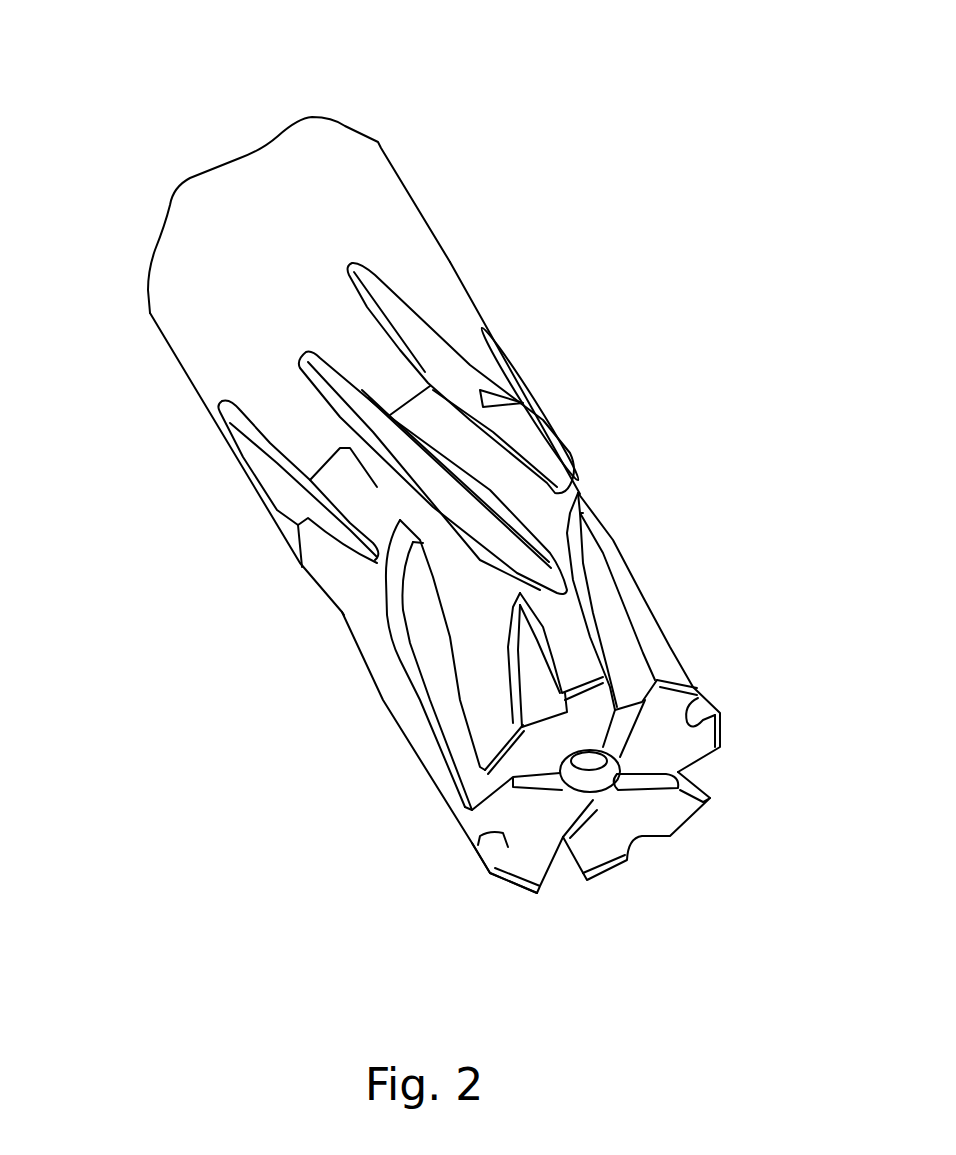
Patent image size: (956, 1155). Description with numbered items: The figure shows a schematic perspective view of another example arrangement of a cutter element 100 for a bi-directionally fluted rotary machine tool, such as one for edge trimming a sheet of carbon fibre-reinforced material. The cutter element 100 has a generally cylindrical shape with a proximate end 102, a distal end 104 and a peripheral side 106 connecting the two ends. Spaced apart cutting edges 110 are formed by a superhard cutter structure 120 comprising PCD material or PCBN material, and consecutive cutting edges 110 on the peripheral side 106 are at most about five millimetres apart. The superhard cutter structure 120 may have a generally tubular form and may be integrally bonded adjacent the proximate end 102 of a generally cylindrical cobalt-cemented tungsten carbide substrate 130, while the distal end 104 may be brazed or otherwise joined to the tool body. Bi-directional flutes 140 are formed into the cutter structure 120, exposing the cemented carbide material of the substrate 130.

The cutter element 100 is at (566, 246).
The proximate end 102 is at (636, 914).
The distal end 104 is at (270, 93).
The peripheral side 106 is at (262, 624).
The cutting edges 110 is at (627, 575).
The superhard cutter structure 120 is at (463, 600).
The substrate 130 is at (177, 309).
The bi-directional flutes 140 is at (492, 430).